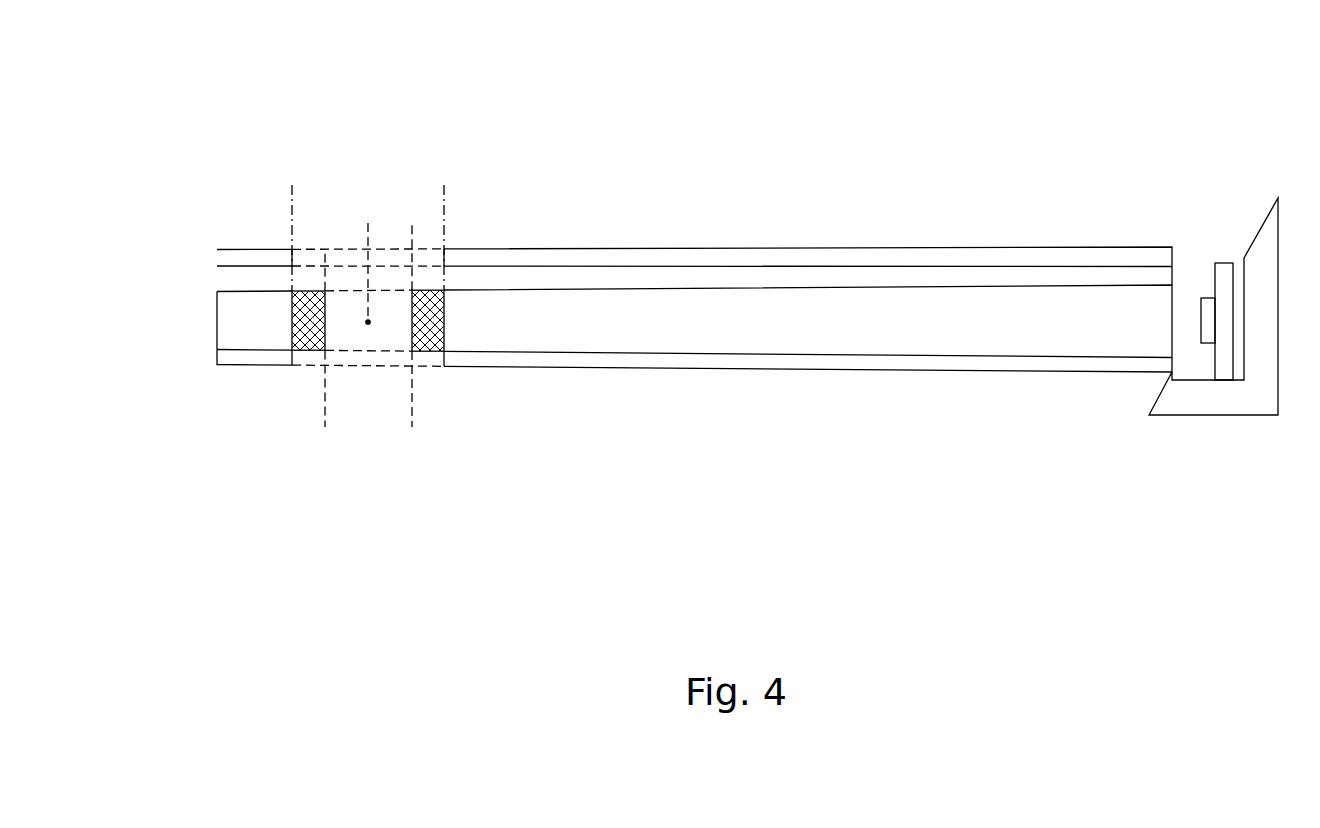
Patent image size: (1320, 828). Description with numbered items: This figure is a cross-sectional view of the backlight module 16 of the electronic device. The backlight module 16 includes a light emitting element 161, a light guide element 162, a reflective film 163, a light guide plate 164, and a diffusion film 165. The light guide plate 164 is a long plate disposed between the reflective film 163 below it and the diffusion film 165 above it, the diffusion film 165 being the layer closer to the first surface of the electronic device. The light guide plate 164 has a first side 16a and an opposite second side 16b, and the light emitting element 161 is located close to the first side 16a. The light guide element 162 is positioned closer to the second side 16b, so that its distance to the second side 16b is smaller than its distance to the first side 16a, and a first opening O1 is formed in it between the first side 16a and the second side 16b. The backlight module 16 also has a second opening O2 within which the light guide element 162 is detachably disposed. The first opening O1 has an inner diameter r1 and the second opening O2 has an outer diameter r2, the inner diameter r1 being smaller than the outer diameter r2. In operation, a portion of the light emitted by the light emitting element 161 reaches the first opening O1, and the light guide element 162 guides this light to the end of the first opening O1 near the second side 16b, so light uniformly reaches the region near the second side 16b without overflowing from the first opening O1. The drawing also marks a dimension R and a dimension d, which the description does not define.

The backlight module 16 is at (195, 56).
The first side 16a is at (1175, 292).
The second side 16b is at (215, 320).
The light emitting element 161 is at (1225, 267).
The light guide element 162 is at (427, 347).
The reflective film 163 is at (780, 360).
The light guide plate 164 is at (850, 312).
The diffusion film 165 is at (782, 260).
The first opening O1 is at (322, 328).
The second opening O2 is at (448, 278).
The inner diameter r1 is at (325, 420).
The outer diameter r2 is at (292, 192).
The distance R is at (368, 230).
The width d is at (465, 230).